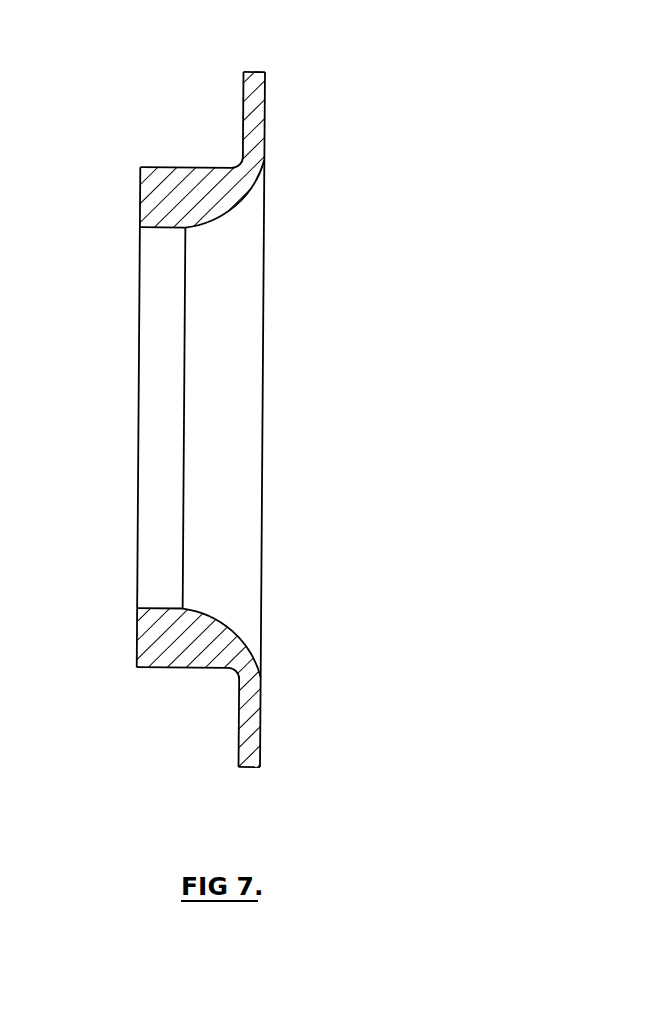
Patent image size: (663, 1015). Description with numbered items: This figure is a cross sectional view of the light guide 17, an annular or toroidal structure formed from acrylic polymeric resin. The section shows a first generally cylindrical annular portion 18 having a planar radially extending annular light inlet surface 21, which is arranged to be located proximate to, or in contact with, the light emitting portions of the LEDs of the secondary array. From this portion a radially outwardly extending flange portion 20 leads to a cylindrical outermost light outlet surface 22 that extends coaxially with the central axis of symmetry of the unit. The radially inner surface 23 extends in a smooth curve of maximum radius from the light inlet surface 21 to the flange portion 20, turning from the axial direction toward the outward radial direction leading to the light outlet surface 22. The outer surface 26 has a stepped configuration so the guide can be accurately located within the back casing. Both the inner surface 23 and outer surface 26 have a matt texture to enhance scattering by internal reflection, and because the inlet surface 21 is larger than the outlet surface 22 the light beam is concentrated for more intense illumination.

The light guide 17 is at (113, 417).
The first generally cylindrical annular portion 18 is at (331, 403).
The flange portion 20 is at (305, 419).
The light inlet surface 21 is at (91, 404).
The light outlet surface 22 is at (260, 412).
The radially inner surface 23 is at (278, 419).
The outer surface 26 is at (126, 405).